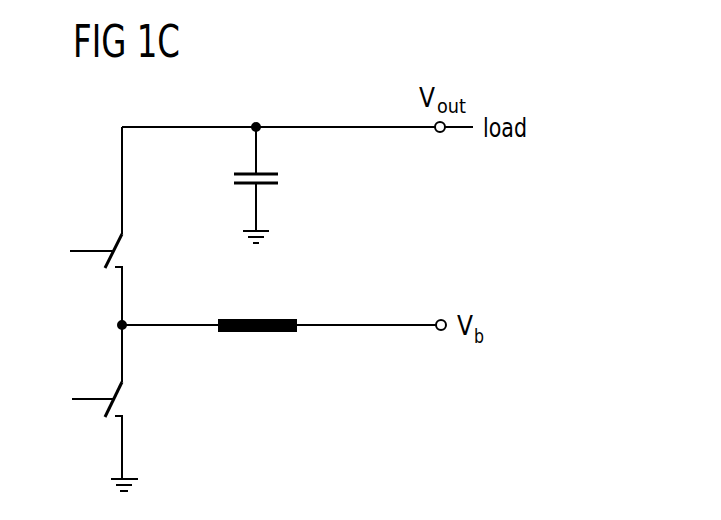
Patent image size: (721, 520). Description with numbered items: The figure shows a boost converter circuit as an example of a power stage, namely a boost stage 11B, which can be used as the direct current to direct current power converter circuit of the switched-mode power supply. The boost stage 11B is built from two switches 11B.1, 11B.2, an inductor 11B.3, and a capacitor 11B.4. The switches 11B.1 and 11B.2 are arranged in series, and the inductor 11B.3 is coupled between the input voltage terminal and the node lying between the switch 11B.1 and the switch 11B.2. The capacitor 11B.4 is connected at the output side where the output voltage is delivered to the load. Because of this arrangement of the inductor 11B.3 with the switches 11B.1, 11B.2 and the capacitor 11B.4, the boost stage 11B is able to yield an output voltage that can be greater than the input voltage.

The boost stage 11B is at (512, 90).
The switch 11B.1 is at (119, 244).
The switch 11B.2 is at (119, 393).
The inductor 11B.3 is at (258, 333).
The capacitor 11B.4 is at (279, 182).